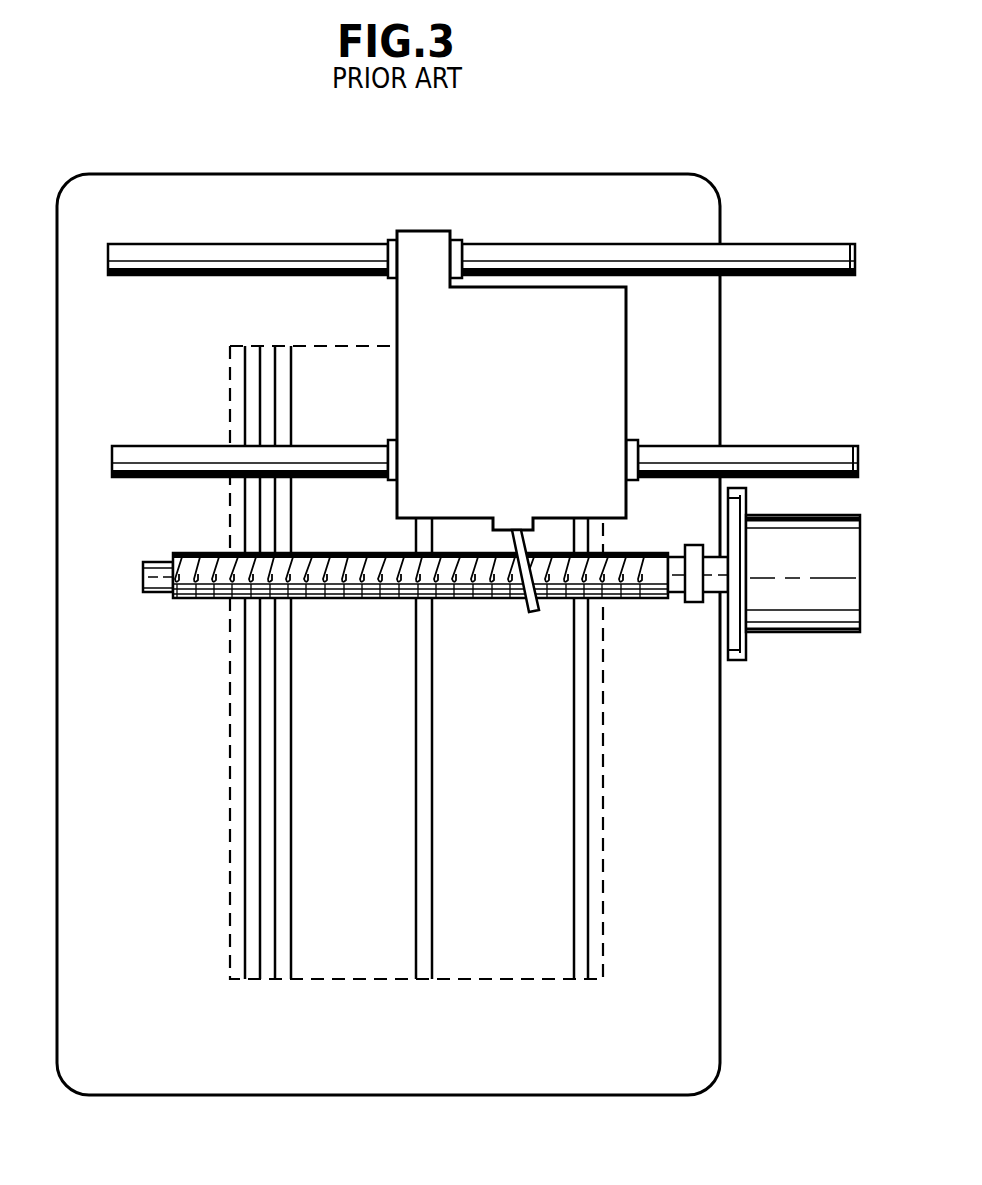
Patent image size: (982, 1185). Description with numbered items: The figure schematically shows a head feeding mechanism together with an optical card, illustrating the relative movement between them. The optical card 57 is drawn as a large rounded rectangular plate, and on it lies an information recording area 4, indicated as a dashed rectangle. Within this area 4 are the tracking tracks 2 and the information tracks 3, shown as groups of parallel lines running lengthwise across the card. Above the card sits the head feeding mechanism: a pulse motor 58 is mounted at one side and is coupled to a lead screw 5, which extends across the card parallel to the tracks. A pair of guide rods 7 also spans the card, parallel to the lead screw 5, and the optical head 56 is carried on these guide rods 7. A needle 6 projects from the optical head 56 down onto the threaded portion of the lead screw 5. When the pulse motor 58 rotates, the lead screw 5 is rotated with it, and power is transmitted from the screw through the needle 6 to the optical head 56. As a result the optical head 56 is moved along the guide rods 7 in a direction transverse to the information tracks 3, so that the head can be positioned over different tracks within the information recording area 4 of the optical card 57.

The tracking tracks 2 is at (292, 948).
The information tracks 3 is at (420, 950).
The information recording area 4 is at (527, 968).
The lead screw 5 is at (200, 602).
The needle 6 is at (528, 613).
The guide rods 7 is at (143, 276).
The optical head 56 is at (626, 362).
The optical card 57 is at (131, 1096).
The pulse motor 58 is at (798, 632).